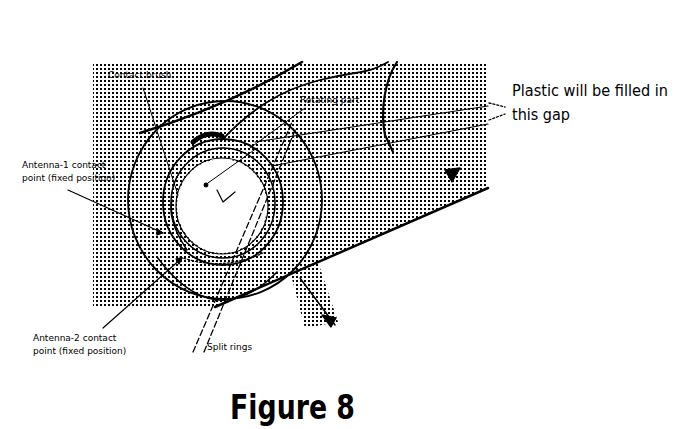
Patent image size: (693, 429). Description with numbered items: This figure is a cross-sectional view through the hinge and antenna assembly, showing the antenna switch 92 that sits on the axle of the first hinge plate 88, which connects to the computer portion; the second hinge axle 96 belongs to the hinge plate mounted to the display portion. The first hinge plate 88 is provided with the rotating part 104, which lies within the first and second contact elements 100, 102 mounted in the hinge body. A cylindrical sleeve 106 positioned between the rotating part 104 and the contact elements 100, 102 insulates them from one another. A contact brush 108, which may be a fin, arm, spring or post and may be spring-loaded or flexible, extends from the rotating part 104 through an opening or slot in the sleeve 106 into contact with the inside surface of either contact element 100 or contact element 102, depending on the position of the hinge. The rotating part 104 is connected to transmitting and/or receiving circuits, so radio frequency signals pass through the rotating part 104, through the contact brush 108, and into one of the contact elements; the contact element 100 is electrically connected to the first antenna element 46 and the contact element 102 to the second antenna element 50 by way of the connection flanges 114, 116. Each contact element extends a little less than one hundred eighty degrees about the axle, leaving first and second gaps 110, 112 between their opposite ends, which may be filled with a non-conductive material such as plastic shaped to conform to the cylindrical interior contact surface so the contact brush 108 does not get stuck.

The first antenna element 46 is at (394, 236).
The second antenna element 50 is at (278, 63).
The first hinge plate 88 is at (312, 322).
The antenna switch 92 is at (384, 62).
The second hinge axle 96 is at (440, 78).
The first contact element 100 is at (253, 253).
The second contact element 102 is at (234, 140).
The rotating part 104 is at (215, 167).
The sleeve 106 is at (172, 200).
The contact brush 108 is at (170, 198).
The first gap 110 is at (275, 158).
The second gap 112 is at (180, 233).
The connection flange 114 is at (180, 257).
The connection flange 116 is at (163, 228).